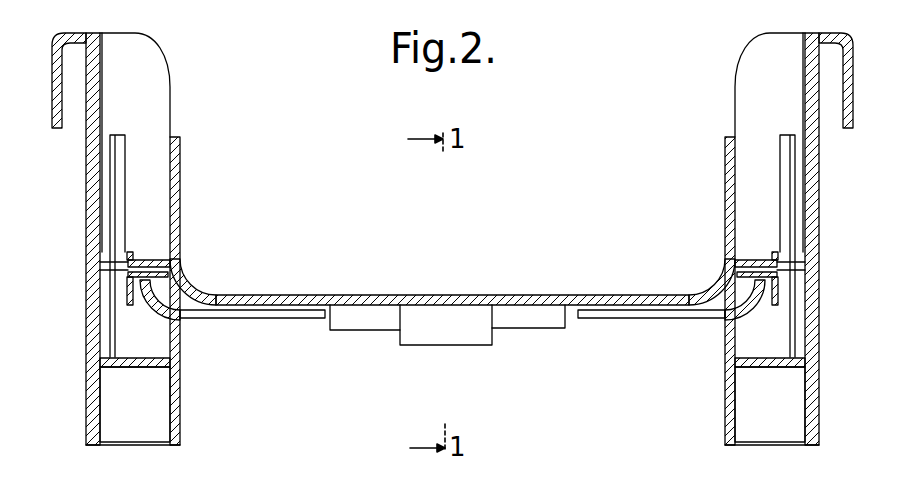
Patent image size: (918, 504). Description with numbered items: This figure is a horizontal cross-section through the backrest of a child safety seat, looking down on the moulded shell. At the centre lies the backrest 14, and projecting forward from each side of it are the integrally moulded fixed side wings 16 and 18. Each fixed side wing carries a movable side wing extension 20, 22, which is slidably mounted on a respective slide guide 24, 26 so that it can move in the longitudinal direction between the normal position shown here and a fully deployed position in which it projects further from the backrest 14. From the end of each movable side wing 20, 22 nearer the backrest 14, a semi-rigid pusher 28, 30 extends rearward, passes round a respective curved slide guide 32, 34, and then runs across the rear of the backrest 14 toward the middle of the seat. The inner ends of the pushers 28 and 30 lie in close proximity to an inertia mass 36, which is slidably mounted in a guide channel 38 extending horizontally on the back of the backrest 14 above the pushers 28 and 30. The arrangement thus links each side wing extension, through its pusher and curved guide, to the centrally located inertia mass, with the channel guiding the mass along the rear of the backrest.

The backrest 14 is at (368, 295).
The fixed side wing 16 is at (732, 230).
The fixed side wing 18 is at (174, 210).
The side wing extension 20 is at (755, 96).
The side wing extension 22 is at (152, 90).
The slide guide 24 is at (782, 202).
The slide guide 26 is at (116, 170).
The semi-rigid pusher 28 is at (705, 314).
The semi-rigid pusher 30 is at (288, 313).
The curved slide guide 32 is at (760, 320).
The curved slide guide 34 is at (150, 332).
The inertia mass 36 is at (360, 318).
The guide channel 38 is at (458, 330).